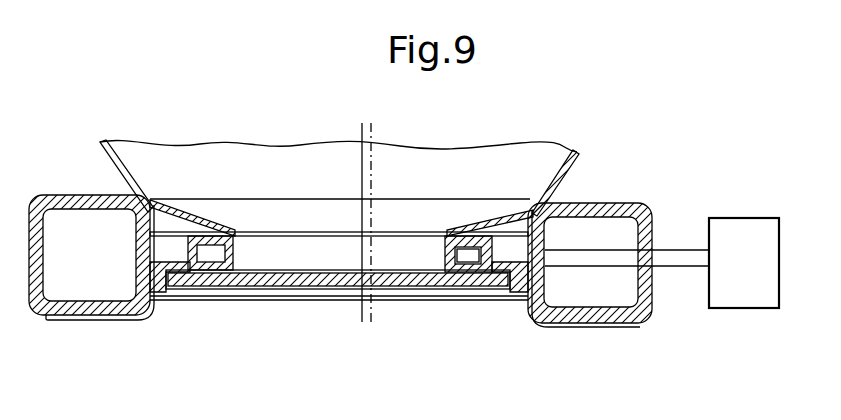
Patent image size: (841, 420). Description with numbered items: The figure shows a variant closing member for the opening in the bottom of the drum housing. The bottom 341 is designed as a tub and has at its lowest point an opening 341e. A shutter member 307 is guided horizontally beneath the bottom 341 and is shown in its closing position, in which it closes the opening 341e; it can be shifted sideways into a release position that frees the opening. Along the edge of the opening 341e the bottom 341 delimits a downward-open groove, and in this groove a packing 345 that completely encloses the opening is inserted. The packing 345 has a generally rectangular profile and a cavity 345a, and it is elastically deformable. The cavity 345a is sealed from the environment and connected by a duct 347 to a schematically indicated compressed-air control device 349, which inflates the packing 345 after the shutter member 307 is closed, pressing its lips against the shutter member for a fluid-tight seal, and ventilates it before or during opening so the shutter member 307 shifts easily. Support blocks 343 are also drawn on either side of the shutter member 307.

The bottom 341 is at (570, 173).
The opening 341e is at (237, 247).
The support block 343 is at (168, 292).
The shutter member 307 is at (278, 289).
The packing 345 is at (470, 272).
The cavity 345a is at (465, 258).
The duct 347 is at (677, 268).
The compressed-air control device 349 is at (737, 310).